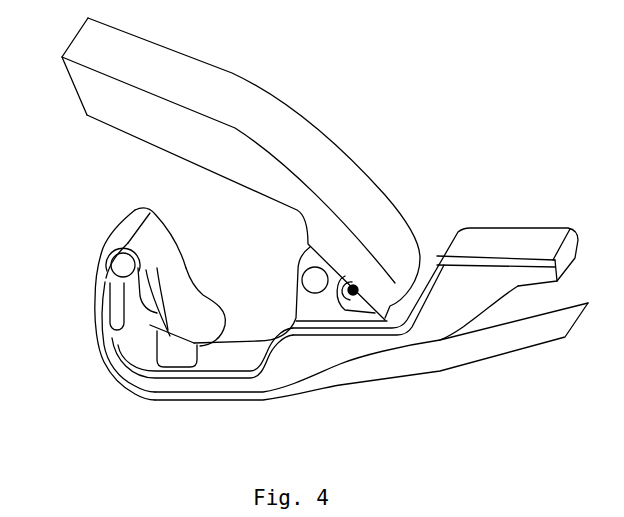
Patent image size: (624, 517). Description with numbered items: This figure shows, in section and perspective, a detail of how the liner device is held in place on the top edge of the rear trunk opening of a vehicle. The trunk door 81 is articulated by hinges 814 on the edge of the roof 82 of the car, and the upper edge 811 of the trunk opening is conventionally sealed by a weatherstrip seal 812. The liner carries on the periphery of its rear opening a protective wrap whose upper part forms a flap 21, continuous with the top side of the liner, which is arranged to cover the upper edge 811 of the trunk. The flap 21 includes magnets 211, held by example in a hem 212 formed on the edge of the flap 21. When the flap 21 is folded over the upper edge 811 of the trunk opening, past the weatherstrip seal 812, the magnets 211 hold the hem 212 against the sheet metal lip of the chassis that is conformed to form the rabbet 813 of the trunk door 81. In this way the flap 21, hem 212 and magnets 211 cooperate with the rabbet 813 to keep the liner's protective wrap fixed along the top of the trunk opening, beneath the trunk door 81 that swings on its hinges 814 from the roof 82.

The trunk door 81 is at (218, 88).
The hinges 814 is at (318, 280).
The roof 82 is at (498, 242).
The flap 21 is at (106, 265).
The weatherstrip seal 812 is at (97, 283).
The upper edge 811 is at (96, 350).
The hem 212 is at (207, 330).
The magnets 211 is at (172, 366).
The rabbet 813 is at (217, 365).